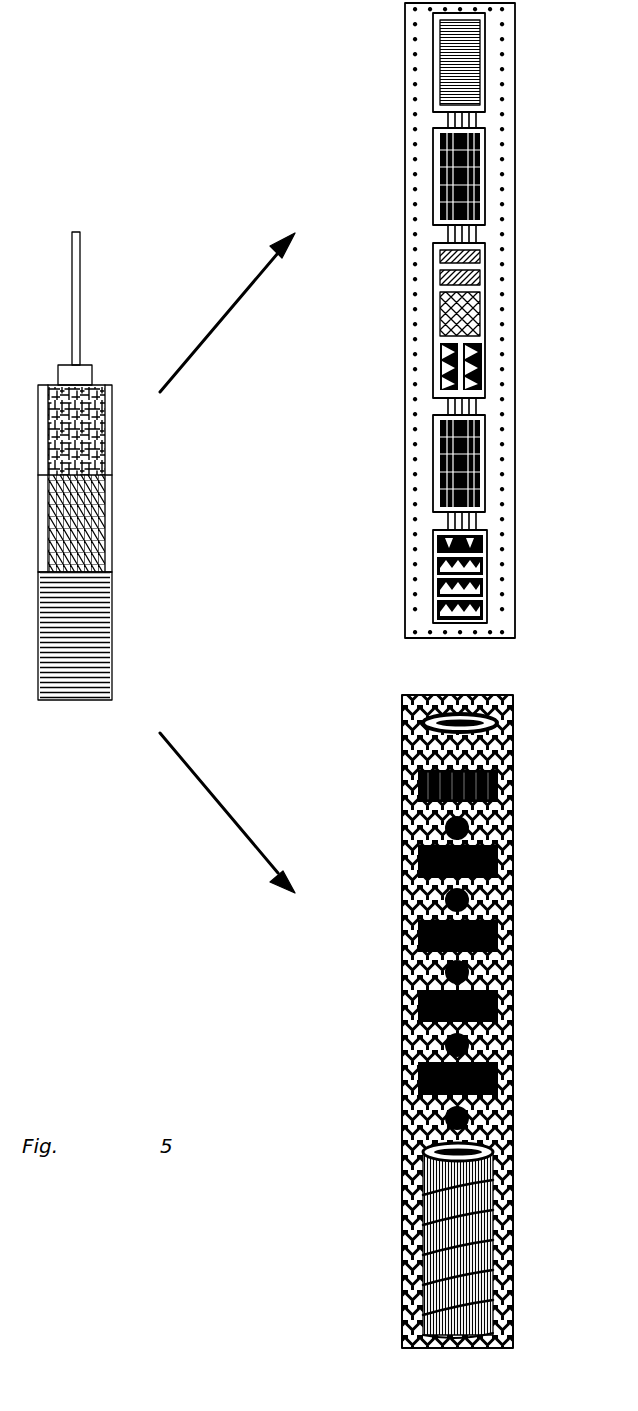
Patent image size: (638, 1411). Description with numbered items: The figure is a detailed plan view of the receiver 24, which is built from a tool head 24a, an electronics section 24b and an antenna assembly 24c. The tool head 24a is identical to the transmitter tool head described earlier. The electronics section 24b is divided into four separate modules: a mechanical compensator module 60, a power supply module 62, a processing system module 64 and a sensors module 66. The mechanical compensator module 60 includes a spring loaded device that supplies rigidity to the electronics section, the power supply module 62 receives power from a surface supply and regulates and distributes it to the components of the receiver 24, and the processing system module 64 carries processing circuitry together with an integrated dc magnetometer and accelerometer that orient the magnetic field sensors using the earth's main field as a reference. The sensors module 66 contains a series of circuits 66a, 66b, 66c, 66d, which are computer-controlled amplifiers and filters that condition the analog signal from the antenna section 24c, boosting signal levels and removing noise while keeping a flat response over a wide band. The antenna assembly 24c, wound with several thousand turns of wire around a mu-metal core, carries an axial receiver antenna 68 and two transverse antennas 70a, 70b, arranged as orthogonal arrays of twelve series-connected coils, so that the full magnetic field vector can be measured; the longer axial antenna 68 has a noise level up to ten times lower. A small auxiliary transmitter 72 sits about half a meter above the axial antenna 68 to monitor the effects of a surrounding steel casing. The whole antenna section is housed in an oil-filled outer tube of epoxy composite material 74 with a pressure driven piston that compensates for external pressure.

The receiver 24 is at (80, 252).
The tool head 24a is at (92, 368).
The electronics section 24b is at (112, 470).
The antenna assembly 24c is at (112, 606).
The mechanical compensator module 60 is at (484, 58).
The power supply module 62 is at (478, 172).
The processing system module 64 is at (478, 368).
The sensors module 66 is at (458, 567).
The circuit 66a is at (437, 545).
The circuit 66b is at (437, 566).
The circuit 66c is at (437, 587).
The circuit 66d is at (437, 610).
The axial receiver antenna 68 is at (513, 1191).
The transverse antenna 70a is at (513, 1005).
The transverse antenna 70b is at (513, 1082).
The auxiliary transmitter 72 is at (497, 722).
The outer tube of epoxy composite material 74 is at (513, 755).